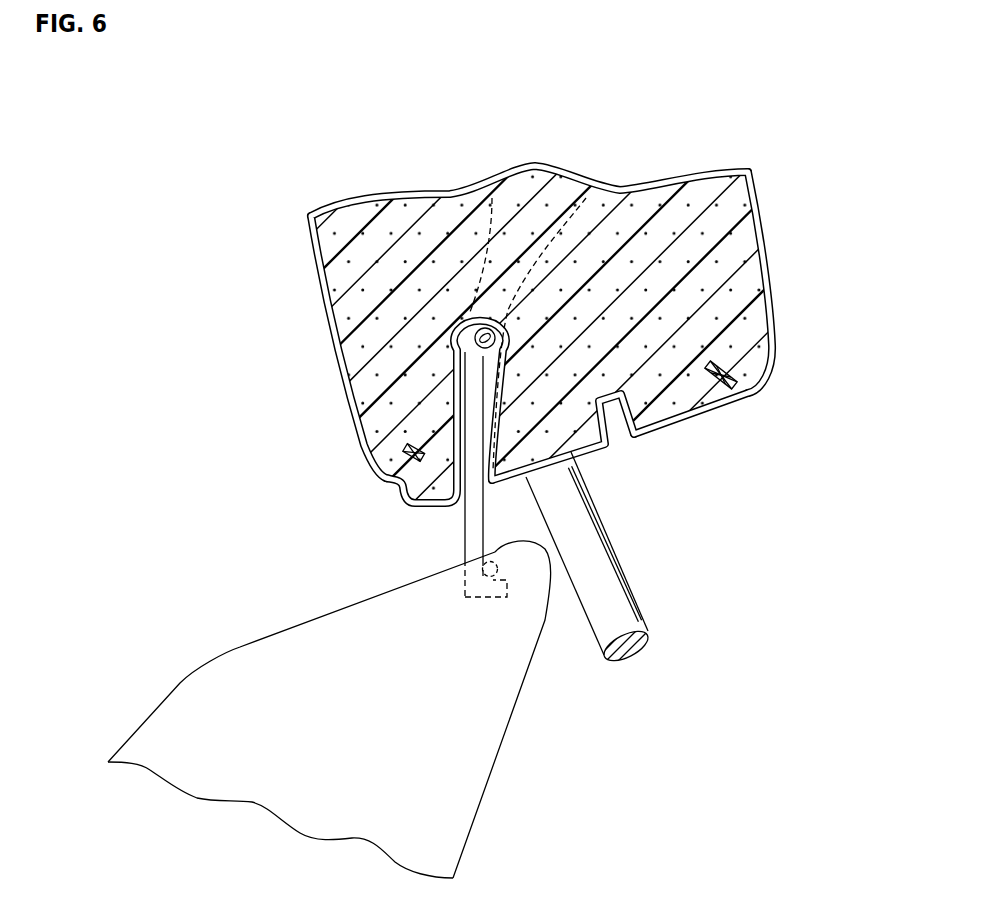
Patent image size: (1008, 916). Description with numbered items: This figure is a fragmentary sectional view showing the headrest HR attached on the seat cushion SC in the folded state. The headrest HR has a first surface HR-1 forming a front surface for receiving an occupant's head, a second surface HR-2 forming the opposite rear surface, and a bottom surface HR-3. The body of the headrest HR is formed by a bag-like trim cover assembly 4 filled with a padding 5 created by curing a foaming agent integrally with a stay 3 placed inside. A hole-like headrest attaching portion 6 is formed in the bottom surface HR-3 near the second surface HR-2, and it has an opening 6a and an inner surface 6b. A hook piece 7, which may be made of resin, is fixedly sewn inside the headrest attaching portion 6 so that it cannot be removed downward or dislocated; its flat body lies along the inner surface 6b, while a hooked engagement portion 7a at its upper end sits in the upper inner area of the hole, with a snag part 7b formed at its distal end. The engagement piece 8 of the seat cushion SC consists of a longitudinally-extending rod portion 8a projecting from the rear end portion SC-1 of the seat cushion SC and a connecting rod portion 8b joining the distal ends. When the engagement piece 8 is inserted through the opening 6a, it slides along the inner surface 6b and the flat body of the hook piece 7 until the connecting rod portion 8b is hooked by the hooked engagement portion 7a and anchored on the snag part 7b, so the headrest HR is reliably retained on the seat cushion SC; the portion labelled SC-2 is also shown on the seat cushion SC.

The stay 3 is at (622, 609).
The trim cover assembly 4 is at (767, 220).
The padding 5 is at (688, 205).
The headrest attaching portion 6 is at (668, 430).
The opening 6a is at (488, 492).
The inner surface 6b is at (510, 483).
The hook piece 7 is at (456, 345).
The hooked engagement portion 7a is at (492, 198).
The snag part 7b is at (586, 198).
The engagement piece 8 is at (398, 474).
The longitudinally-extending rod portion 8a is at (405, 452).
The connecting rod portion 8b is at (456, 320).
The headrest HR is at (488, 350).
The first surface HR-1 is at (772, 337).
The second surface HR-2 is at (455, 312).
The bottom surface HR-3 is at (740, 403).
The seat cushion SC is at (381, 709).
The rear end portion SC-1 is at (227, 650).
The seat cover second flap SC-2 is at (520, 690).